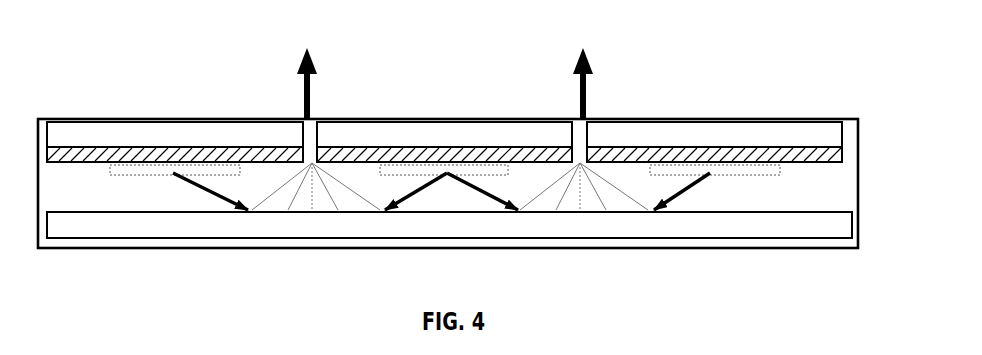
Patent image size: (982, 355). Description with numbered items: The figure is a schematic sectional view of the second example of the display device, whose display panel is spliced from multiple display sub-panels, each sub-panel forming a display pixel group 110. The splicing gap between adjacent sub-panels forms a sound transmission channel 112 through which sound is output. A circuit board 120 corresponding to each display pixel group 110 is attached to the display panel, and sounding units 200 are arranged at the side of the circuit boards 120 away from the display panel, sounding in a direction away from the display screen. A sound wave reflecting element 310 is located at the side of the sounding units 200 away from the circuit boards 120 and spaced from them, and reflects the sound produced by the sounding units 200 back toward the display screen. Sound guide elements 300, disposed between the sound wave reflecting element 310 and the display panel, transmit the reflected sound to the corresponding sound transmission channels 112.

The display pixel group 110 is at (160, 128).
The sound transmission channel 112 is at (302, 117).
The circuit board 120 is at (68, 140).
The sounding unit 200 is at (150, 172).
The sound guide element 300 is at (317, 192).
The sound wave reflecting element 310 is at (823, 212).